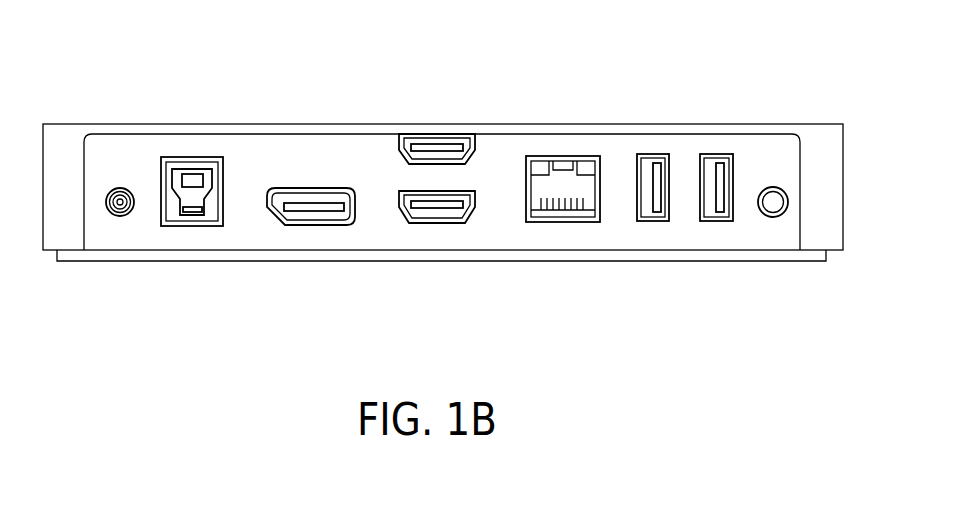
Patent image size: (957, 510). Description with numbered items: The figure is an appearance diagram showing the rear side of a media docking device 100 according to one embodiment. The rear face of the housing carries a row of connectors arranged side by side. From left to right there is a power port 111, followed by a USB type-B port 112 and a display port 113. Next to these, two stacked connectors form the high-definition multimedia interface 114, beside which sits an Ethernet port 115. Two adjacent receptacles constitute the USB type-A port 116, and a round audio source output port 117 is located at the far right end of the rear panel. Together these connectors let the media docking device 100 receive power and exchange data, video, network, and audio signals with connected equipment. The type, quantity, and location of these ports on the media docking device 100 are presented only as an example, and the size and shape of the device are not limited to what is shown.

The media docking device 100 is at (789, 124).
The power port 111 is at (121, 216).
The USB type-B port 112 is at (189, 226).
The display port 113 is at (310, 219).
The high-definition multimedia interface 114 is at (450, 157).
The Ethernet port 115 is at (566, 178).
The USB type-A port 116 is at (712, 212).
The audio source output port 117 is at (772, 217).